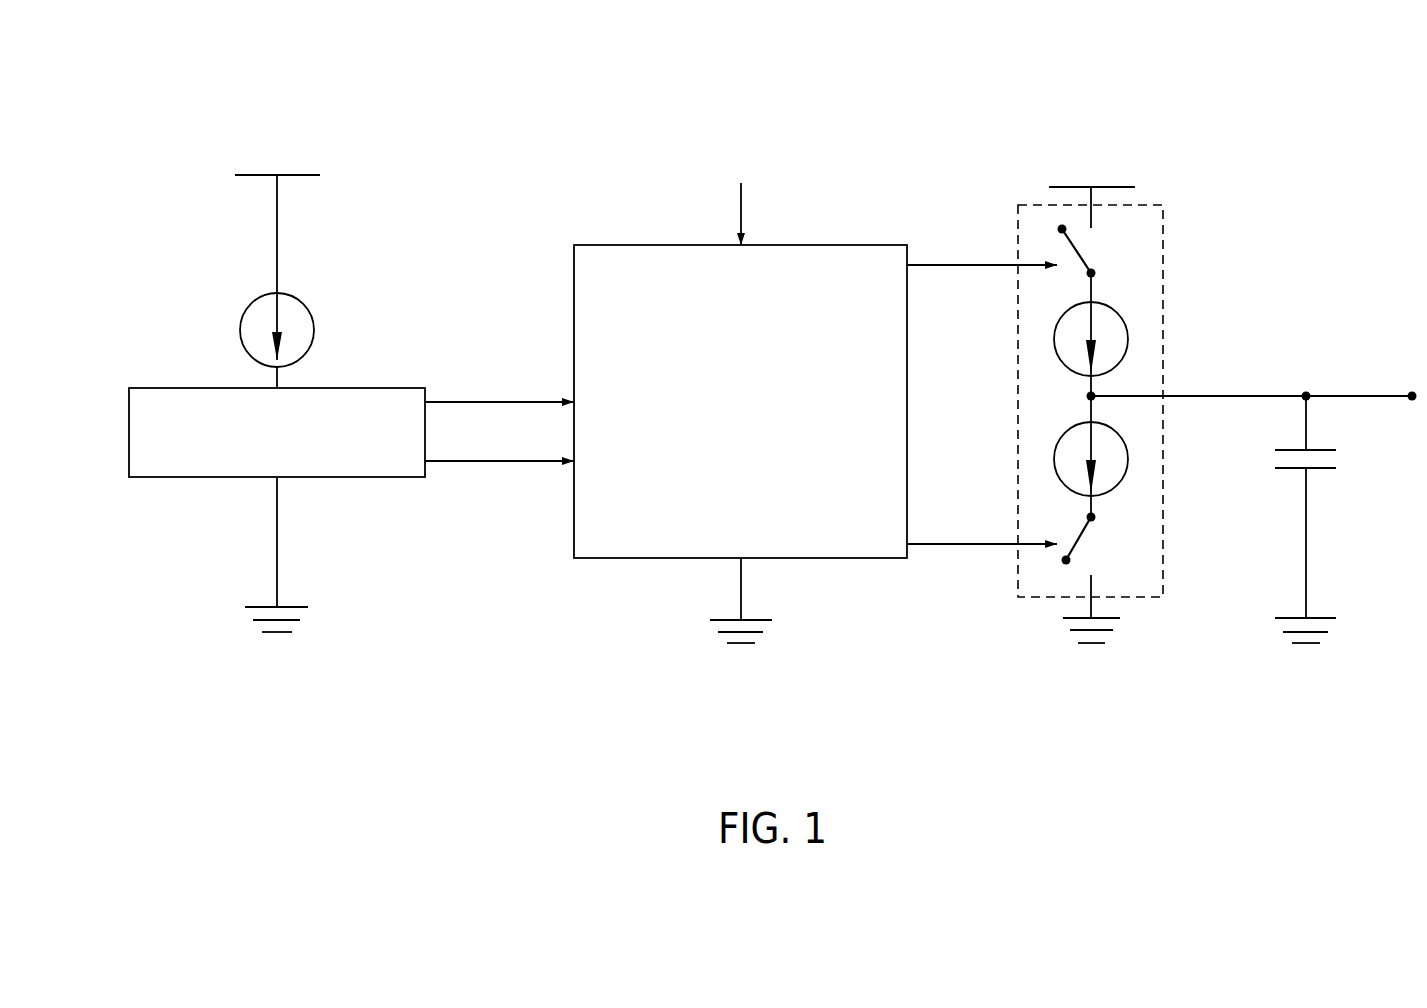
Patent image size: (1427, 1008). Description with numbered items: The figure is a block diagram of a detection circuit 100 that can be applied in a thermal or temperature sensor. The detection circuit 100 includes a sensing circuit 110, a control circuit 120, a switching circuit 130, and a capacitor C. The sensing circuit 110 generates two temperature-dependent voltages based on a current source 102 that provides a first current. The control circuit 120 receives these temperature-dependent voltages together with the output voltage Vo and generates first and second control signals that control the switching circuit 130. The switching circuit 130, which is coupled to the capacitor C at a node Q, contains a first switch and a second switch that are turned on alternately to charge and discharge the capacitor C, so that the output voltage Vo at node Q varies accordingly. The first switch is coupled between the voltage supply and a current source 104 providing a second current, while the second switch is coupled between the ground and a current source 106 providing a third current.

The detection circuit 100 is at (145, 106).
The current source 102 is at (307, 307).
The current source 104 is at (1128, 331).
The current source 106 is at (1128, 452).
The sensing circuit 110 is at (298, 465).
The control circuit 120 is at (762, 452).
The switching circuit 130 is at (1156, 415).